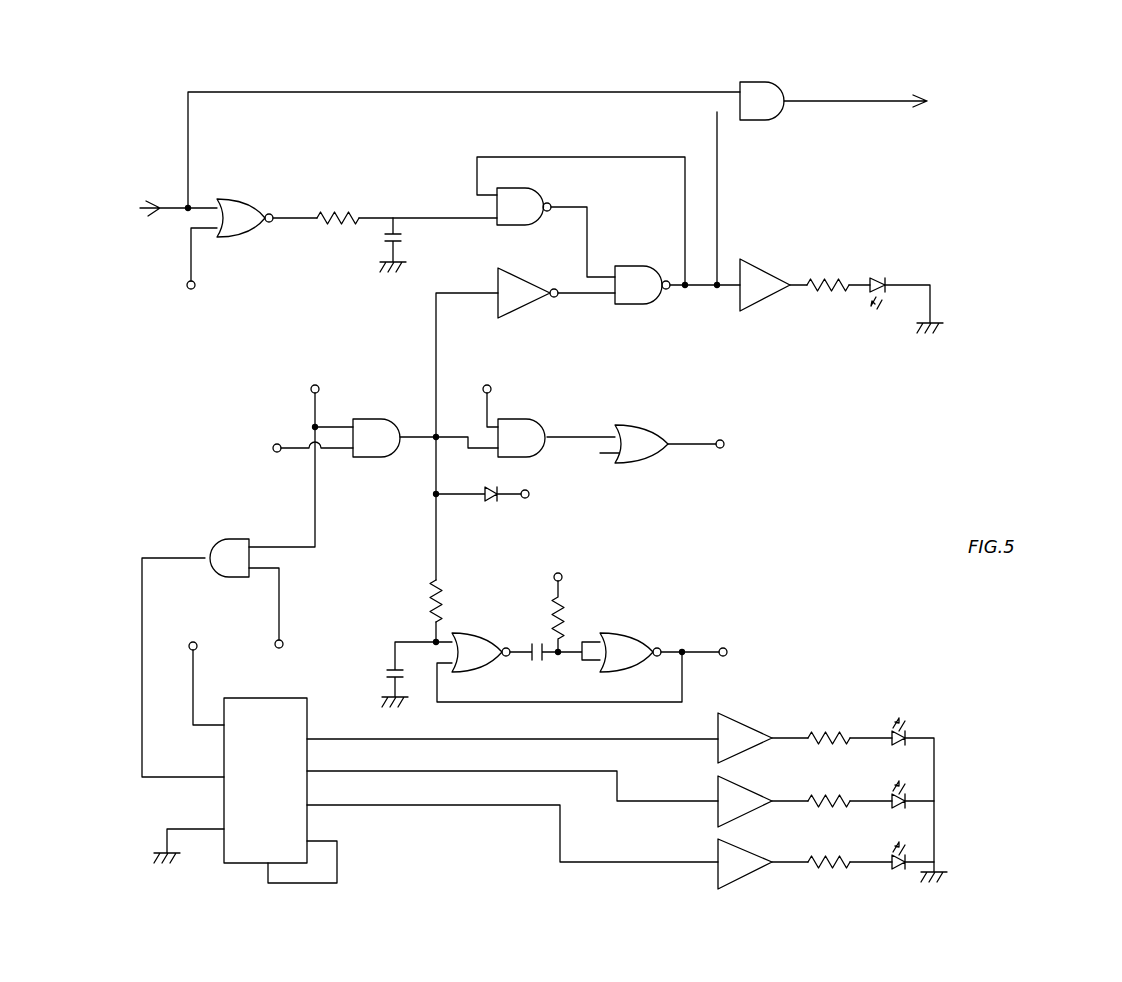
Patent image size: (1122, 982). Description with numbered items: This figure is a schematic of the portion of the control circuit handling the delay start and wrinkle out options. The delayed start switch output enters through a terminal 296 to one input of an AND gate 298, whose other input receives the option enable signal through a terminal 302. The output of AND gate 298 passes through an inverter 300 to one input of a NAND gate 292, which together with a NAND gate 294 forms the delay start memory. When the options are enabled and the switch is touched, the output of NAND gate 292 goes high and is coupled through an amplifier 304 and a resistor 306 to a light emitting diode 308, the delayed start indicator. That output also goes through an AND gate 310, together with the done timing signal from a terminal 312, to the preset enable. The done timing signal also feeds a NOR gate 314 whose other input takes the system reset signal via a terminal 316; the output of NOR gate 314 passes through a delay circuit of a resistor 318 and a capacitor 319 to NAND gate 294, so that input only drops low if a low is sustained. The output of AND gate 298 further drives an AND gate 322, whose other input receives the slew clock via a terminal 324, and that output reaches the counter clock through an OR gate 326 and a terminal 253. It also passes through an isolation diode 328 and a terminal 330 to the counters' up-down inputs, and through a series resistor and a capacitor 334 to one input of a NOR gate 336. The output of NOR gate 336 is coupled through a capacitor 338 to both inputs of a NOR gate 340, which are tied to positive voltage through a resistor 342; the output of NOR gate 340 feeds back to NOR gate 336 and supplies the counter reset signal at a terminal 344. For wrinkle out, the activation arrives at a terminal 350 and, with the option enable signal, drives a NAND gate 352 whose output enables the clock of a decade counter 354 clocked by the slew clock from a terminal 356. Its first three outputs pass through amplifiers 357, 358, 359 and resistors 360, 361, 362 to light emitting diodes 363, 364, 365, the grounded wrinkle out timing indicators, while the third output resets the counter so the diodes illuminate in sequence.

The terminal 253 is at (720, 448).
The NAND gate 292 is at (644, 274).
The NAND gate 294 is at (527, 228).
The terminal 296 is at (273, 446).
The AND gate 298 is at (371, 422).
The inverter 300 is at (522, 284).
The terminal 302 is at (316, 385).
The amplifier 304 is at (760, 297).
The resistor 306 is at (832, 280).
The light emitting diode 308 is at (879, 276).
The AND gate 310 is at (762, 86).
The terminal 312 is at (151, 210).
The NOR gate 314 is at (246, 208).
The terminal 316 is at (191, 289).
The resistor 318 is at (335, 217).
The capacitor 319 is at (402, 240).
The AND gate 322 is at (529, 422).
The terminal 324 is at (488, 387).
The OR gate 326 is at (646, 431).
The isolation diode 328 is at (494, 501).
The terminal 330 is at (529, 491).
The capacitor 334 is at (385, 675).
The NOR gate 336 is at (484, 642).
The capacitor 338 is at (536, 656).
The NOR gate 340 is at (622, 660).
The resistor 342 is at (566, 623).
The terminal 344 is at (725, 656).
The terminal 350 is at (283, 646).
The NAND gate 352 is at (229, 546).
The decade counter 354 is at (272, 706).
The terminal 356 is at (193, 642).
The amplifier 357 is at (751, 725).
The amplifier 358 is at (740, 791).
The amplifier 359 is at (739, 851).
The resistor 360 is at (818, 732).
The resistor 361 is at (816, 797).
The resistor 362 is at (814, 858).
The light emitting diode 363 is at (899, 748).
The light emitting diode 364 is at (896, 808).
The light emitting diode 365 is at (901, 873).